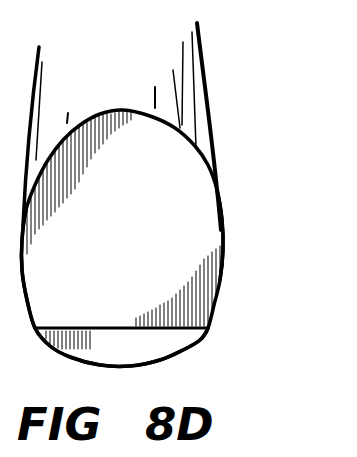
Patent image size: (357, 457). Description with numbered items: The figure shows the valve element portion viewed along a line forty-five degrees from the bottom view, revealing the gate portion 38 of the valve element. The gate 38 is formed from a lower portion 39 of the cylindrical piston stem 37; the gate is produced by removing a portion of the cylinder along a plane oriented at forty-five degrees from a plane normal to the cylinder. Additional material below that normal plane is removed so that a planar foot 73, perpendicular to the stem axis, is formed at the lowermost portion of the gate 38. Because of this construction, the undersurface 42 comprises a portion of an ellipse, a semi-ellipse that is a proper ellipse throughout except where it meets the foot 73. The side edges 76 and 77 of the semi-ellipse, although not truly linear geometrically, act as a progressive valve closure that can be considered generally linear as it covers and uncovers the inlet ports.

The piston stem 37 is at (203, 50).
The lower portion of the piston stem 39 is at (236, 227).
The undersurface 42 is at (130, 255).
The side edge of the semi-ellipse 77 is at (218, 252).
The gate portion 38 is at (200, 297).
The side edge of the semi-ellipse 76 is at (25, 308).
The foot 73 is at (122, 347).